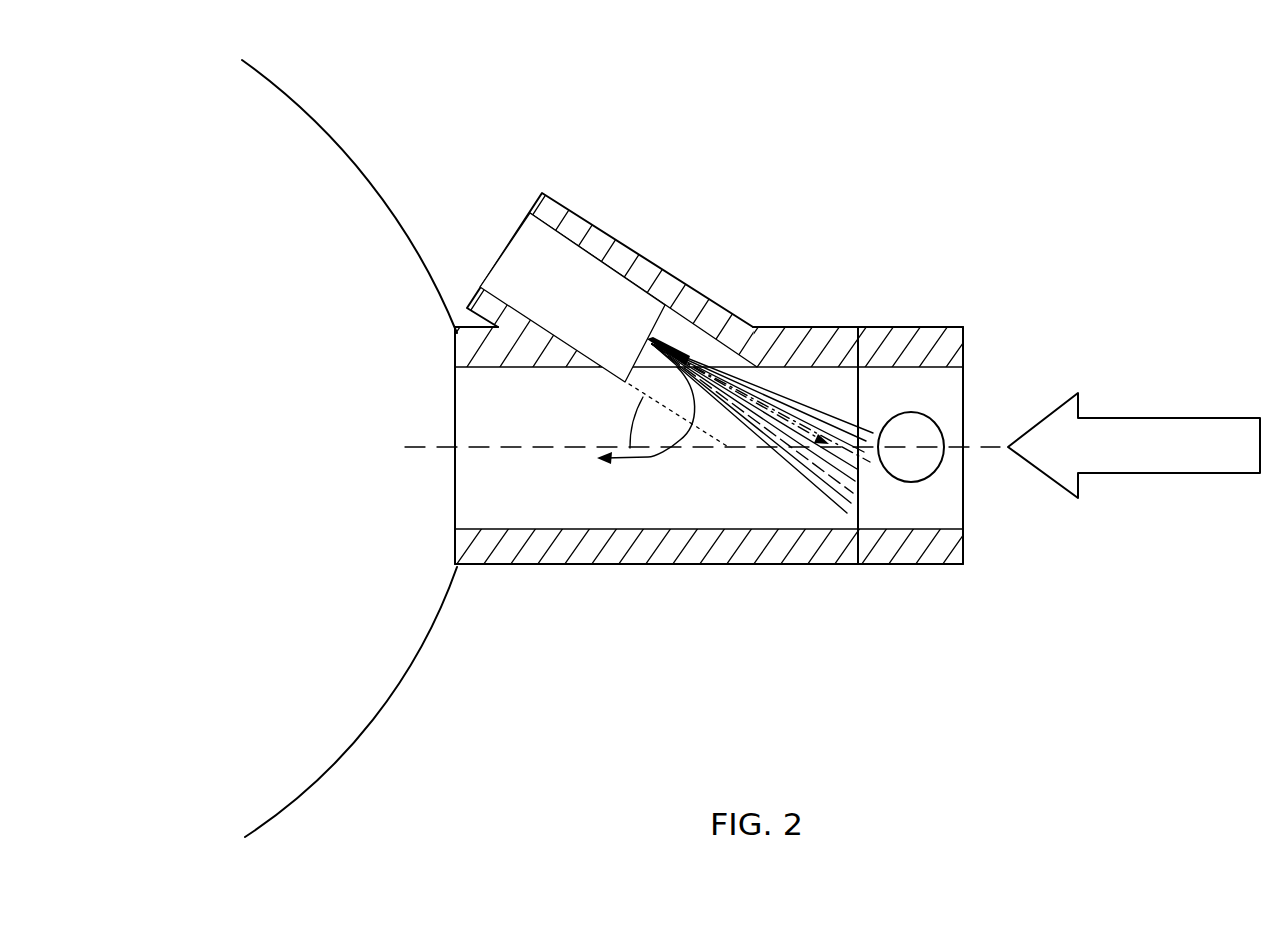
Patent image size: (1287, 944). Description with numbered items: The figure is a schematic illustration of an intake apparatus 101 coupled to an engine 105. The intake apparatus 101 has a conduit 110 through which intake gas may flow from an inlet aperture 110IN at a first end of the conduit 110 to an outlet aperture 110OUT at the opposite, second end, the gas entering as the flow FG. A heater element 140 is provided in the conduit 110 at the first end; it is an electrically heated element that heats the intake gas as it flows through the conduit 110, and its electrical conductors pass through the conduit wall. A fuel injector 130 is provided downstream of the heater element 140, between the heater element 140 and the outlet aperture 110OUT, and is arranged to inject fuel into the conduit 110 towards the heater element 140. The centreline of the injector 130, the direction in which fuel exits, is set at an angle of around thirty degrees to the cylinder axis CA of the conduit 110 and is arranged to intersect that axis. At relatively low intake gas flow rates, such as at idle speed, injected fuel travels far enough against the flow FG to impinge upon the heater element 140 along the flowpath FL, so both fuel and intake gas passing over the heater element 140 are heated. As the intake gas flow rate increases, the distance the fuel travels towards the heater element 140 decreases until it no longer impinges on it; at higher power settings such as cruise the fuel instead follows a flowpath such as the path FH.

The intake apparatus 101 is at (909, 226).
The engine 105 is at (348, 239).
The conduit 110 is at (800, 547).
The outlet aperture 110OUT is at (436, 487).
The inlet aperture 110IN is at (981, 398).
The fuel injector 130 is at (605, 287).
The heater element 140 is at (937, 472).
The cylinder axis CA is at (752, 455).
The flowpath FL is at (797, 410).
The flowpath FH is at (648, 457).
The flow of intake gas FG is at (1182, 418).